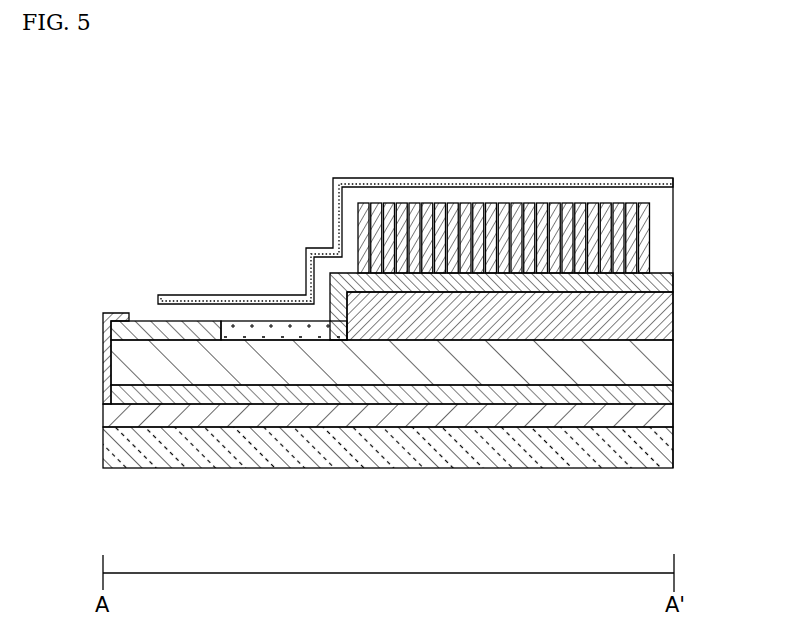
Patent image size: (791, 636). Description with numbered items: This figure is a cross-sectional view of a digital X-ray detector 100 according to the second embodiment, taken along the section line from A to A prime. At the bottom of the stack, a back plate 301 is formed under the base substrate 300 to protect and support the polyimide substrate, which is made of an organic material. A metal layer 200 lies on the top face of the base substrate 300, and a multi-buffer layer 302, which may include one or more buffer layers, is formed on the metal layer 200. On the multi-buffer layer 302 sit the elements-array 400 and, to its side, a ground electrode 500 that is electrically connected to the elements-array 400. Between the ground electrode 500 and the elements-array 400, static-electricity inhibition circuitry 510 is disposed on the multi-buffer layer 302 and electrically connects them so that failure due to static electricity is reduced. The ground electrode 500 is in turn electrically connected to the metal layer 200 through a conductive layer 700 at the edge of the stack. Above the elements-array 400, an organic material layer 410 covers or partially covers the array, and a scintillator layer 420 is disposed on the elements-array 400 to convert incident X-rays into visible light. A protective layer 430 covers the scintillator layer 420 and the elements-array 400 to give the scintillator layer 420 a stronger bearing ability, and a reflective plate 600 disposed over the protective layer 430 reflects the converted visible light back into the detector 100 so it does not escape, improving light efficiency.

The digital X-ray detector 100 is at (620, 97).
The metal layer 200 is at (668, 397).
The base substrate 300 is at (667, 418).
The back plate 301 is at (663, 454).
The multi-buffer layer 302 is at (661, 362).
The elements-array 400 is at (665, 315).
The organic material layer 410 is at (662, 288).
The scintillator layer 420 is at (645, 240).
The protective layer 430 is at (667, 203).
The ground electrode 500 is at (163, 335).
The static-electricity inhibition circuitry 510 is at (270, 335).
The reflective plate 600 is at (673, 181).
The conductive layer 700 is at (105, 353).